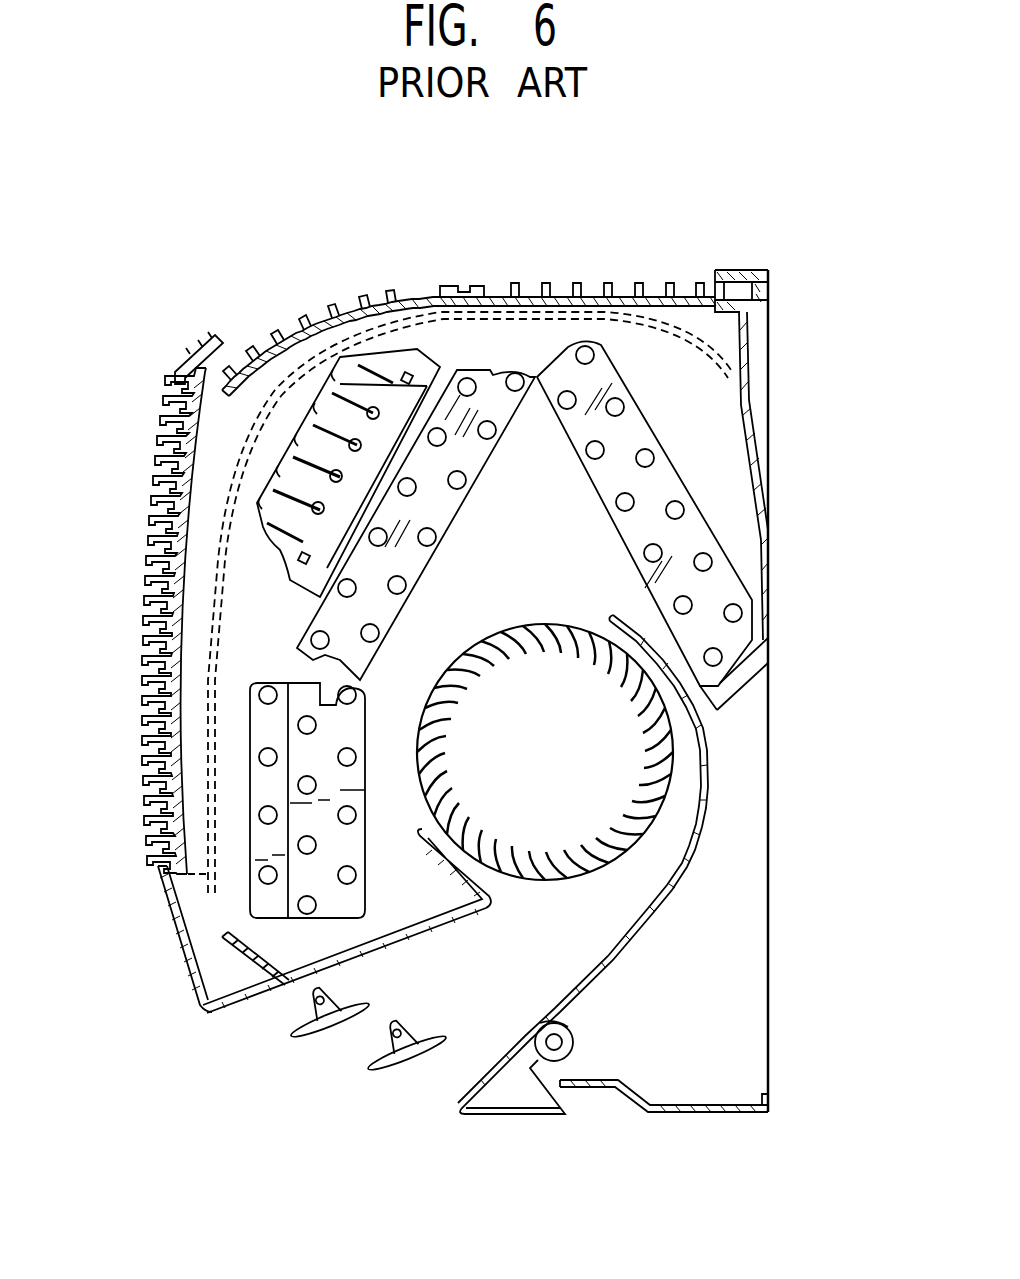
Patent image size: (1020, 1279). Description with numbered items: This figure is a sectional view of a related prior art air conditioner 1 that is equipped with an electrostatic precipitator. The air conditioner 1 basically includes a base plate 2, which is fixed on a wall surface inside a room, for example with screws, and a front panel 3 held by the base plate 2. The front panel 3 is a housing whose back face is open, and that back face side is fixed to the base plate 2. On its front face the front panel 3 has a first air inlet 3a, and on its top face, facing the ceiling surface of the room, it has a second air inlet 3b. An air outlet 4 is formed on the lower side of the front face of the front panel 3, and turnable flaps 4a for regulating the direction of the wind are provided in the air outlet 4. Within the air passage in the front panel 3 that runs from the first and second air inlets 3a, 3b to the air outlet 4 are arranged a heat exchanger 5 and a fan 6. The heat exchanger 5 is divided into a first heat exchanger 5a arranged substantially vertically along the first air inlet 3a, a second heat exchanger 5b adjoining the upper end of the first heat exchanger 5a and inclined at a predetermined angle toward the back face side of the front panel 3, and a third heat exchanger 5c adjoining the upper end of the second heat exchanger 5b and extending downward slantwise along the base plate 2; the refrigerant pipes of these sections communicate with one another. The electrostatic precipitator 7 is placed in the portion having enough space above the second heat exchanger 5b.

The air conditioner 1 is at (828, 227).
The base plate 2 is at (755, 410).
The front panel 3 is at (155, 920).
The first air inlet 3a is at (136, 512).
The second air inlet 3b is at (427, 266).
The air outlet 4 is at (459, 995).
The flaps 4a is at (370, 1073).
The heat exchanger 5 is at (541, 629).
The first heat exchanger 5a is at (350, 755).
The second heat exchanger 5b is at (462, 437).
The third heat exchanger 5c is at (720, 590).
The fan 6 is at (532, 684).
The electrostatic precipitator 7 is at (372, 346).